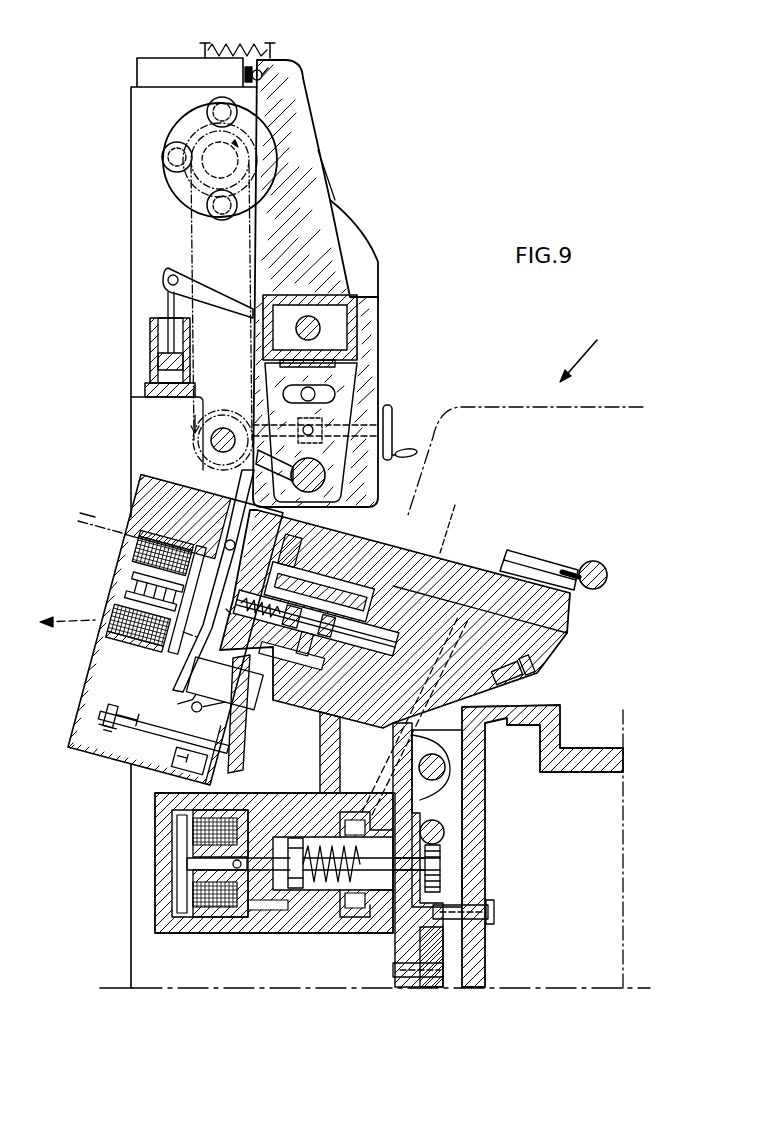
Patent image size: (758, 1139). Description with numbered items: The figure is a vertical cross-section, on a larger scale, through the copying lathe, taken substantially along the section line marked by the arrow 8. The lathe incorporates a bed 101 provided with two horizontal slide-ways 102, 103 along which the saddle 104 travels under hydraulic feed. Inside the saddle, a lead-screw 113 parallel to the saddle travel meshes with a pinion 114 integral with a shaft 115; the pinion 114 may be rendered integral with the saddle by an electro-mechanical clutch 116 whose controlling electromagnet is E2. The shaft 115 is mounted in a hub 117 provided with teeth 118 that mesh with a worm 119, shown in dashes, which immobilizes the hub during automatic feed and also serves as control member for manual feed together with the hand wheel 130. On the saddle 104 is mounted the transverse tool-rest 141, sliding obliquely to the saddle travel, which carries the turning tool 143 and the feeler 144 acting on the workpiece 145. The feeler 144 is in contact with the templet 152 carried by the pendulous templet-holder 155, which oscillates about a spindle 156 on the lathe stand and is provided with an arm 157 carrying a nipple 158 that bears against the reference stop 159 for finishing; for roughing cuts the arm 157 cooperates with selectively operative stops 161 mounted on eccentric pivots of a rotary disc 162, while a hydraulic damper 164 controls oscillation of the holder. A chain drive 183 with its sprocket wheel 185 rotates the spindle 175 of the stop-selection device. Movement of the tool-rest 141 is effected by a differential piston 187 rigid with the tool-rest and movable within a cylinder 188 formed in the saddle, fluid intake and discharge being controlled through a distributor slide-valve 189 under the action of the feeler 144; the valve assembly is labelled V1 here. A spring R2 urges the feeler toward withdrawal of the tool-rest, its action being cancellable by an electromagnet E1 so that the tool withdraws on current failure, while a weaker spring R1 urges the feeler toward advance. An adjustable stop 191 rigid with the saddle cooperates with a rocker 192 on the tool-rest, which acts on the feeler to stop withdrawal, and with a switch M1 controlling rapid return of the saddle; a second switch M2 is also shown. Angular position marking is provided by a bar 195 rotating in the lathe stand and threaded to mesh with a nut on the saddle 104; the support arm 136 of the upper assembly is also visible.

The view direction arrow 8 is at (585, 361).
The bed 101 is at (575, 770).
The slide-way 102 is at (528, 678).
The slide-way 103 is at (435, 915).
The saddle 104 is at (528, 655).
The lead-screw 113 is at (437, 828).
The pinion 114 is at (441, 863).
The shaft 115 is at (263, 870).
The electro-mechanical clutch 116 is at (297, 892).
The hub 117 is at (330, 905).
The teeth 118 is at (360, 908).
The worm 119 is at (362, 768).
The hand wheel 130 is at (452, 582).
The support arm 136 is at (308, 107).
The transverse tool-rest 141 is at (481, 570).
The turning tool 143 is at (566, 566).
The feeler 144 is at (254, 478).
The workpiece 145 is at (608, 575).
The templet 152 is at (326, 477).
The templet-holder 155 is at (330, 288).
The spindle 156 is at (320, 325).
The arm 157 is at (322, 177).
The nipple 158 is at (275, 60).
The reference stop 159 is at (247, 52).
The stops 161 is at (163, 150).
The rotary disc 162 is at (180, 190).
The hydraulic damper 164 is at (158, 338).
The spindle 175 is at (211, 440).
The chain drive 183 is at (190, 245).
The sprocket wheel 185 is at (222, 407).
The differential piston 187 is at (402, 575).
The cylinder 188 is at (380, 550).
The slide-valve 189 is at (258, 693).
The adjustable stop 191 is at (113, 703).
The rocker 192 is at (170, 717).
The bar 195 is at (440, 782).
The spring R1 is at (228, 612).
The spring R2 is at (120, 575).
The electromagnet E1 is at (103, 610).
The electromagnet E2 is at (155, 856).
The switch M1 is at (160, 745).
The microswitch M2 is at (193, 690).
The valve V1 is at (302, 685).